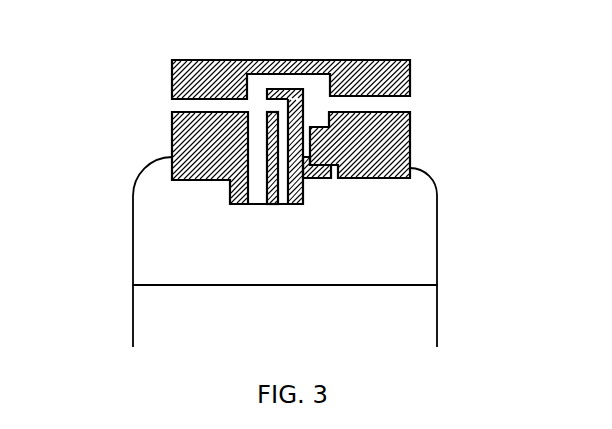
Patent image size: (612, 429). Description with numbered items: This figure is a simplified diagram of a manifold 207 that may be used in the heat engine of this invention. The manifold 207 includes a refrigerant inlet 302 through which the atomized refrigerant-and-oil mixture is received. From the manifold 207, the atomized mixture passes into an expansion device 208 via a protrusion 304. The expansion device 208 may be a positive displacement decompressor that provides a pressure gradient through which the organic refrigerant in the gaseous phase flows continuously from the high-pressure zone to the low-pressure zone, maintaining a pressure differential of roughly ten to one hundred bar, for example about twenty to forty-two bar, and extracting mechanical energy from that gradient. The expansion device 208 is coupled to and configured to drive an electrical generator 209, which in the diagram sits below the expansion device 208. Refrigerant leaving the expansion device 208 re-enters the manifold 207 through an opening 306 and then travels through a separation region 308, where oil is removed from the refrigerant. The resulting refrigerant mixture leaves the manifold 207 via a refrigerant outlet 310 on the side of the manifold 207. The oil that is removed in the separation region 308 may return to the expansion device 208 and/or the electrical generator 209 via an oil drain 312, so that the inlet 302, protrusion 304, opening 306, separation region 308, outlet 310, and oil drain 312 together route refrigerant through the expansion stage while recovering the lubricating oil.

The manifold 207 is at (170, 73).
The refrigerant inlet 302 is at (173, 103).
The separation region 308 is at (317, 110).
The protrusion 304 is at (288, 205).
The opening 306 is at (257, 205).
The refrigerant outlet 310 is at (410, 104).
The oil drain 312 is at (340, 181).
The expansion device 208 is at (305, 258).
The electrical generator 209 is at (305, 330).